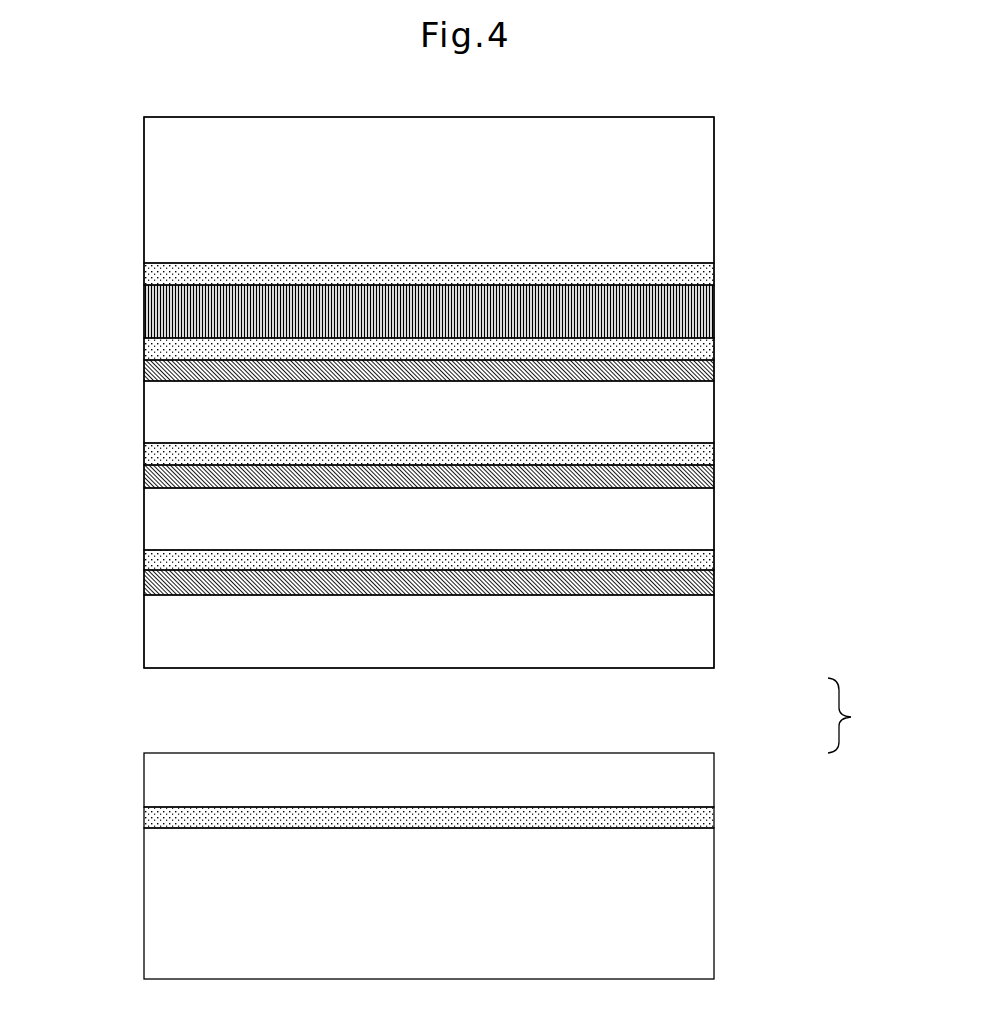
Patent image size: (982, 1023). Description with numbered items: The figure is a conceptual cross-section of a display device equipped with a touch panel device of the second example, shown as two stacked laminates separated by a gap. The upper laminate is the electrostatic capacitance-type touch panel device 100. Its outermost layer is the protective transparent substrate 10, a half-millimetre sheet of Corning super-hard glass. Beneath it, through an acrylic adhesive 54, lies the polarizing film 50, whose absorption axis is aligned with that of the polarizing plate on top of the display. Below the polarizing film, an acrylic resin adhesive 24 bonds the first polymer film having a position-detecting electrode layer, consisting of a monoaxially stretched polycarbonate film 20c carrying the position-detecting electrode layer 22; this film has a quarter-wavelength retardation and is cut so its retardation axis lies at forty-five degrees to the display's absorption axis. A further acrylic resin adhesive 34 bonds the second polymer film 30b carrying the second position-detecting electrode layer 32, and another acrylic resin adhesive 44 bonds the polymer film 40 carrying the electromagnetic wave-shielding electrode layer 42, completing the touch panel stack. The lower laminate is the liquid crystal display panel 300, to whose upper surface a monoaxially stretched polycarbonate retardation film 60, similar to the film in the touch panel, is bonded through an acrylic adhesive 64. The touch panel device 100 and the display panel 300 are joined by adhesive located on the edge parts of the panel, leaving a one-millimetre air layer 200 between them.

The protective transparent substrate 10 is at (163, 160).
The adhesive 54 is at (186, 278).
The polarizing film 50 is at (165, 318).
The adhesive 24 is at (663, 348).
The position-detecting electrode layer 22 is at (705, 368).
The polymer film 20c is at (703, 433).
The adhesive 34 is at (197, 456).
The position-detecting electrode layer 32 is at (146, 465).
The polymer film 30b is at (155, 530).
The adhesive 44 is at (675, 563).
The shielding electrode layer 42 is at (708, 585).
The polymer film having a shielding electrode layer 40 is at (703, 638).
The touch panel device 100 is at (828, 112).
The air layer 200 is at (857, 715).
The retardation film 60 is at (674, 774).
The adhesive 64 is at (707, 820).
The liquid crystal display panel 300 is at (828, 838).